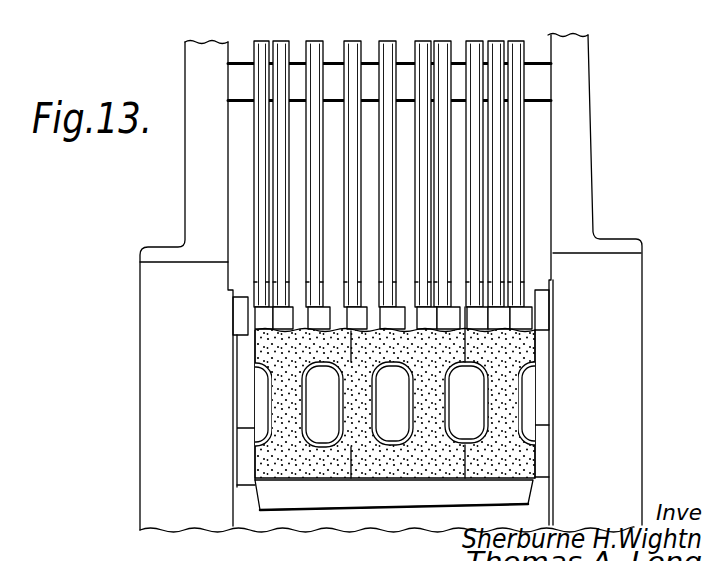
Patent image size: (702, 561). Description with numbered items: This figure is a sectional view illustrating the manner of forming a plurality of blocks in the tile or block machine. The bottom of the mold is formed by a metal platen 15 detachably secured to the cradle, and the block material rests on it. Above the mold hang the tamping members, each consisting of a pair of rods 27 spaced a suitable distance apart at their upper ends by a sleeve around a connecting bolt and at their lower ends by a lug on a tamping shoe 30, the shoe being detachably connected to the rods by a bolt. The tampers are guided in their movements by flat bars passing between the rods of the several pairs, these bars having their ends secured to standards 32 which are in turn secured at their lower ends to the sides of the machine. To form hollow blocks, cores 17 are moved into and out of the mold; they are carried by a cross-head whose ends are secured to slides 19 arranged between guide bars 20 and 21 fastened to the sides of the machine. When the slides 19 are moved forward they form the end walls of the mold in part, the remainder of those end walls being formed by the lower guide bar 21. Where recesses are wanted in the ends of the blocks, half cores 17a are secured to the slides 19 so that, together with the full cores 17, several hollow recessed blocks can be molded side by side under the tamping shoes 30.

The standards 32 is at (200, 203).
The rods 27 is at (445, 43).
The tamping shoe 30 is at (283, 327).
The guide bar 20 is at (242, 322).
The slides 19 is at (243, 402).
The lower guide bar 21 is at (248, 457).
The cores 17 is at (395, 404).
The half cores 17a is at (268, 410).
The platen 15 is at (360, 498).